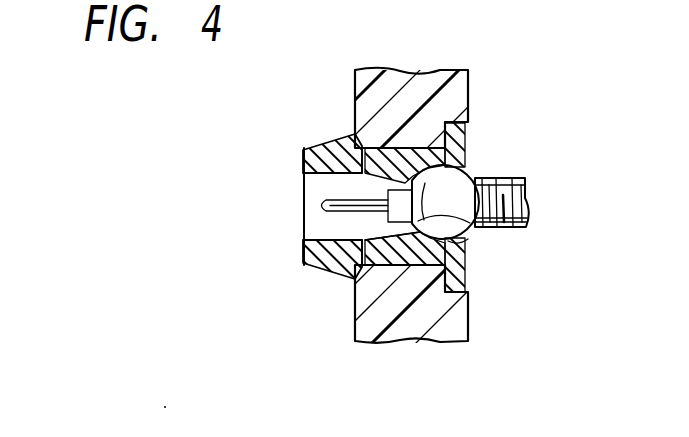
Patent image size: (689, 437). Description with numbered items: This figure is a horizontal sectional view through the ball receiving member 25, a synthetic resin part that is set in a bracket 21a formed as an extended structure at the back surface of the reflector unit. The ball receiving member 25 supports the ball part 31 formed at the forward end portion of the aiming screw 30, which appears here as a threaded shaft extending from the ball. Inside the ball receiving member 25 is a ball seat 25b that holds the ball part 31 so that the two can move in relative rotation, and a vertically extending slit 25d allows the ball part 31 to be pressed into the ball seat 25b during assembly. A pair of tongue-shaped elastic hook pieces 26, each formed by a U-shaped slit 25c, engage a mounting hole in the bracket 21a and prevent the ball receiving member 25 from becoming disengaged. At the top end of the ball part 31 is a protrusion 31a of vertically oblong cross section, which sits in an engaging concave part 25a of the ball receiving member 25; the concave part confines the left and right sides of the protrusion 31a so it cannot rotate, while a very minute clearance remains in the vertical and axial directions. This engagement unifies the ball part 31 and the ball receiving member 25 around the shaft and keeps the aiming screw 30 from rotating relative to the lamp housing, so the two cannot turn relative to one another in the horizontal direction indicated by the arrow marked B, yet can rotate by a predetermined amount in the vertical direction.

The bracket 21a is at (454, 96).
The ball receiving member 25 is at (456, 145).
The engaging concave part 25a is at (466, 242).
The ball seat 25b is at (440, 246).
The U-shaped slit 25c is at (304, 152).
The vertically extending slit 25d is at (326, 220).
The elastic hook piece 26 is at (353, 142).
The aiming screw 30 is at (510, 236).
The ball part 31 is at (464, 172).
The protrusion 31a is at (326, 199).